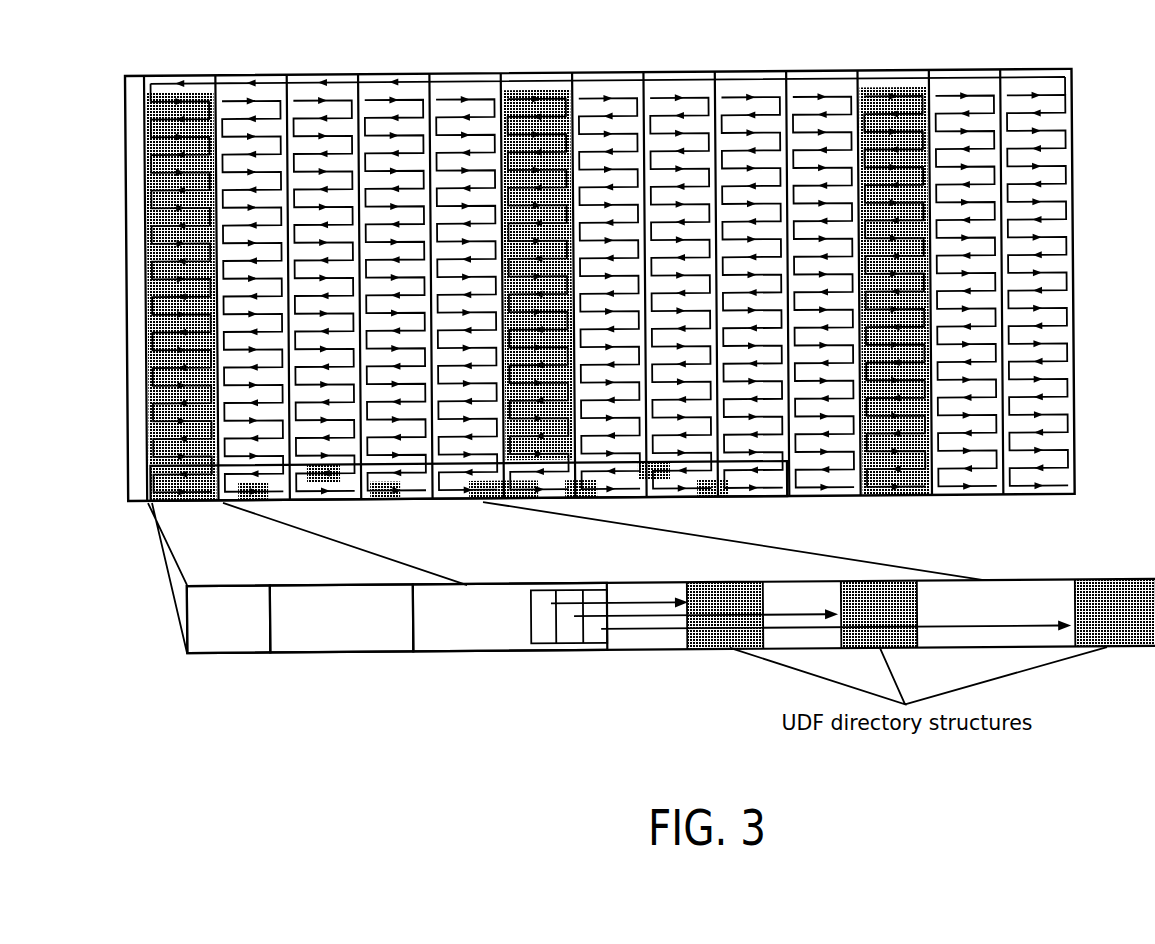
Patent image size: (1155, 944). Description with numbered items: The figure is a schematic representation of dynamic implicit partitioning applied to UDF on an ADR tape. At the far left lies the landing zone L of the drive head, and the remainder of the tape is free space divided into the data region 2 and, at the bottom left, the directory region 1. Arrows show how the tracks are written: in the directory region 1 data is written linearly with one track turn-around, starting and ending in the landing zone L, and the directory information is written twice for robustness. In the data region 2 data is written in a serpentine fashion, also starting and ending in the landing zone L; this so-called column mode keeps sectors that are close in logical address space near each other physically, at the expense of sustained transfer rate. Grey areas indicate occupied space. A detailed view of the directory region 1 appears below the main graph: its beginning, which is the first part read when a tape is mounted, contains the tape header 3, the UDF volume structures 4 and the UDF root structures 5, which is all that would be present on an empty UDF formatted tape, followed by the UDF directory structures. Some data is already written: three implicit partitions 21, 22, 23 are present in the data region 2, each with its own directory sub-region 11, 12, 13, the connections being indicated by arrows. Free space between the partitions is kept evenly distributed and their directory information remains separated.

The directory region 1 is at (768, 500).
The data region 2 is at (1072, 288).
The tape header 3 is at (227, 654).
The UDF volume structures 4 is at (340, 654).
The UDF root structures 5 is at (485, 651).
The directory sub-region 11 is at (261, 504).
The directory sub-region 12 is at (389, 503).
The directory sub-region 13 is at (329, 502).
The implicit partition 21 is at (202, 106).
The implicit partition 22 is at (548, 102).
The implicit partition 23 is at (907, 98).
The landing zone L is at (137, 500).